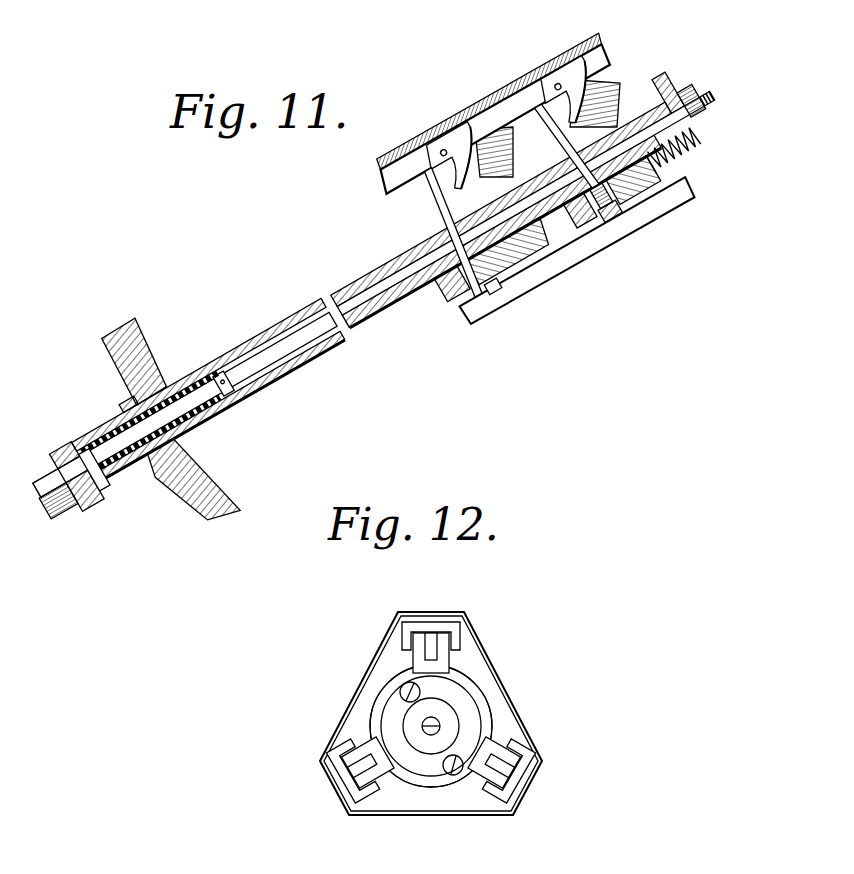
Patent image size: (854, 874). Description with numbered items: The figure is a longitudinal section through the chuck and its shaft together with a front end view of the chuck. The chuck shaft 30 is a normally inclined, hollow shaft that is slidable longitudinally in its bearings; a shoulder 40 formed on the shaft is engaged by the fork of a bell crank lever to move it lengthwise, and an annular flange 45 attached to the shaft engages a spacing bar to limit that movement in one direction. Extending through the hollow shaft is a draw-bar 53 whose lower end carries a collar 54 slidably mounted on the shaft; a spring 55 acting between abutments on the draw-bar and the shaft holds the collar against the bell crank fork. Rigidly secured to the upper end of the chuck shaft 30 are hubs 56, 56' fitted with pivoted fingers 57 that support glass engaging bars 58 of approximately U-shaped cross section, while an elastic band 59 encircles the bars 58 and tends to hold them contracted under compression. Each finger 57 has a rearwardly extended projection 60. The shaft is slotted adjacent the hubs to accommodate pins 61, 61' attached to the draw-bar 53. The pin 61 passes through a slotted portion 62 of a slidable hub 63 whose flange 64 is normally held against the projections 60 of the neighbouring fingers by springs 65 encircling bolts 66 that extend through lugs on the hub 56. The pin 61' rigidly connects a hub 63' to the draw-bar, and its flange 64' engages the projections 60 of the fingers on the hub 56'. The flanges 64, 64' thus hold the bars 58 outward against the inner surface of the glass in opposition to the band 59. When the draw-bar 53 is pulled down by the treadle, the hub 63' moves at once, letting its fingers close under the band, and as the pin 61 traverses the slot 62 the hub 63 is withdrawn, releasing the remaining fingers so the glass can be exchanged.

In FIG. 11, the chuck shaft 30 is at (208, 386).
In FIG. 11, the shoulder 40 is at (130, 402).
In FIG. 11, the annular flange 45 is at (120, 347).
In FIG. 11, the draw-bar 53 is at (296, 348).
In FIG. 11, the collar 54 is at (89, 507).
In FIG. 11, the spring 55 is at (135, 465).
In FIG. 11, the hub 56 is at (520, 193).
In FIG. 12, the hub 56 is at (485, 726).
In FIG. 11, the hub 56' is at (578, 251).
In FIG. 11, the pivoted fingers 57 is at (460, 137).
In FIG. 12, the pivoted fingers 57 is at (427, 628).
In FIG. 11, the glass engaging bars 58 is at (500, 82).
In FIG. 12, the glass engaging bars 58 is at (438, 618).
In FIG. 11, the elastic band 59 is at (458, 105).
In FIG. 12, the elastic band 59 is at (497, 672).
In FIG. 11, the projection 60 is at (440, 183).
In FIG. 11, the pin 61 is at (547, 128).
In FIG. 11, the pin 61' is at (511, 230).
In FIG. 11, the slotted portion 62 is at (604, 218).
In FIG. 11, the slidable hub 63 is at (570, 221).
In FIG. 11, the hub 63' is at (436, 233).
In FIG. 11, the flange 64 is at (634, 241).
In FIG. 12, the flange 64 is at (388, 726).
In FIG. 11, the flange 64' is at (501, 317).
In FIG. 11, the springs 65 is at (687, 157).
In FIG. 11, the bolts 66 is at (694, 139).
In FIG. 12, the bolts 66 is at (403, 687).